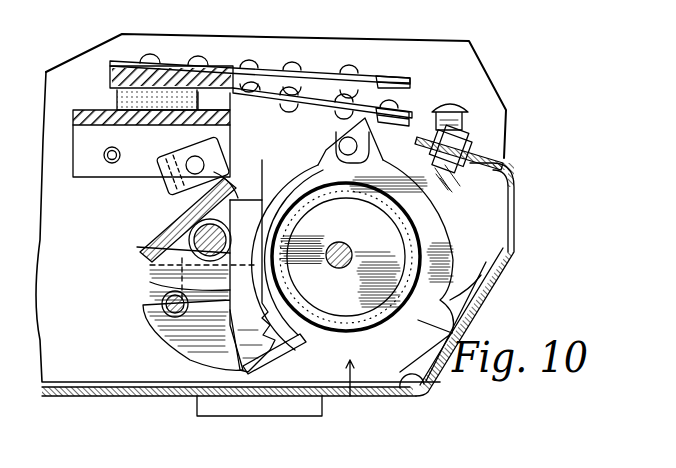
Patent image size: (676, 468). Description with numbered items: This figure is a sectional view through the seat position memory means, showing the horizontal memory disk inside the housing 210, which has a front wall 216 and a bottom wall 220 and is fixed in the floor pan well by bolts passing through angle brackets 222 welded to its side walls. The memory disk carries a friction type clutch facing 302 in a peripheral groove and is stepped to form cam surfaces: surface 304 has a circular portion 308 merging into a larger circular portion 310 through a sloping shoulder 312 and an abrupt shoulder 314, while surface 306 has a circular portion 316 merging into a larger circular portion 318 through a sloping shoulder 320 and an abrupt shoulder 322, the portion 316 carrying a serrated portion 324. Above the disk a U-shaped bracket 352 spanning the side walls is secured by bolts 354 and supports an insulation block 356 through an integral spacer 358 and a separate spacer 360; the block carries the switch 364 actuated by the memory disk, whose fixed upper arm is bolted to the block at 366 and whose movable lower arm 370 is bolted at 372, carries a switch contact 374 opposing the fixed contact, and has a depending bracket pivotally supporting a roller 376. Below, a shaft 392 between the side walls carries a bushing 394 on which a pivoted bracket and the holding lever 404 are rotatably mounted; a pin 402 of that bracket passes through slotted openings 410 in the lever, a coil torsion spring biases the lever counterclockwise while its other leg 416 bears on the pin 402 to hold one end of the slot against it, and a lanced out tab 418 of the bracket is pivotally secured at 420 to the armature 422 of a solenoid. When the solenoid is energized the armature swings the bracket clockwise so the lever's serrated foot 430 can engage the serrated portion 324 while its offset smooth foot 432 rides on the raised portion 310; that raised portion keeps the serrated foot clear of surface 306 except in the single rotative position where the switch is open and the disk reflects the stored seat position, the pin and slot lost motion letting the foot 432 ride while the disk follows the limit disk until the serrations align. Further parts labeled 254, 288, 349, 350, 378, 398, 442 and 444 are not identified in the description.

The housing 210 is at (100, 368).
The front wall 216 is at (514, 216).
The bottom wall 220 is at (160, 397).
The angle brackets 222 is at (235, 410).
The shaft 254 is at (350, 252).
The casing bottom 288 is at (350, 396).
The friction type clutch facing 302 is at (436, 226).
The cam surface 304 is at (440, 260).
The cam surface 306 is at (398, 304).
The circular portion 308 is at (424, 290).
The circular portion of larger diameter 310 is at (286, 204).
The sloping shoulder 312 is at (324, 164).
The abrupt shoulder 314 is at (317, 320).
The circular portion 316 is at (362, 358).
The circular portion of larger diameter 318 is at (488, 280).
The sloping shoulder 320 is at (476, 300).
The abrupt shoulder 322 is at (417, 142).
The serrated portion 324 is at (336, 266).
The housing corner 349 is at (495, 112).
The housing 350 is at (120, 42).
The U-shaped bracket 352 is at (110, 84).
The bolts 354 is at (108, 164).
The block of insulation 356 is at (220, 62).
The integral spacer 358 is at (120, 102).
The spacer 360 is at (412, 90).
The switch 364 is at (367, 64).
The bolted connection of fixed switch arm 366 is at (340, 54).
The lower or movable switch arm 370 is at (296, 100).
The bolted connection of movable switch arm 372 is at (378, 110).
The switch contact 374 is at (438, 118).
The roller 376 is at (330, 140).
The spacer 378 is at (232, 92).
The shaft 392 is at (170, 234).
The bushing 394 is at (192, 220).
The arm edge 398 is at (160, 246).
The pin 402 is at (160, 304).
The holding lever 404 is at (158, 322).
The slotted openings 410 is at (188, 316).
The spring leg 416 is at (194, 312).
The lanced out tab 418 is at (218, 174).
The pivotal connection 420 is at (204, 163).
The armature 422 is at (182, 158).
The serrated foot 430 is at (258, 320).
The smooth foot 432 is at (303, 346).
The plate 442 is at (160, 258).
The plate edge 444 is at (160, 284).